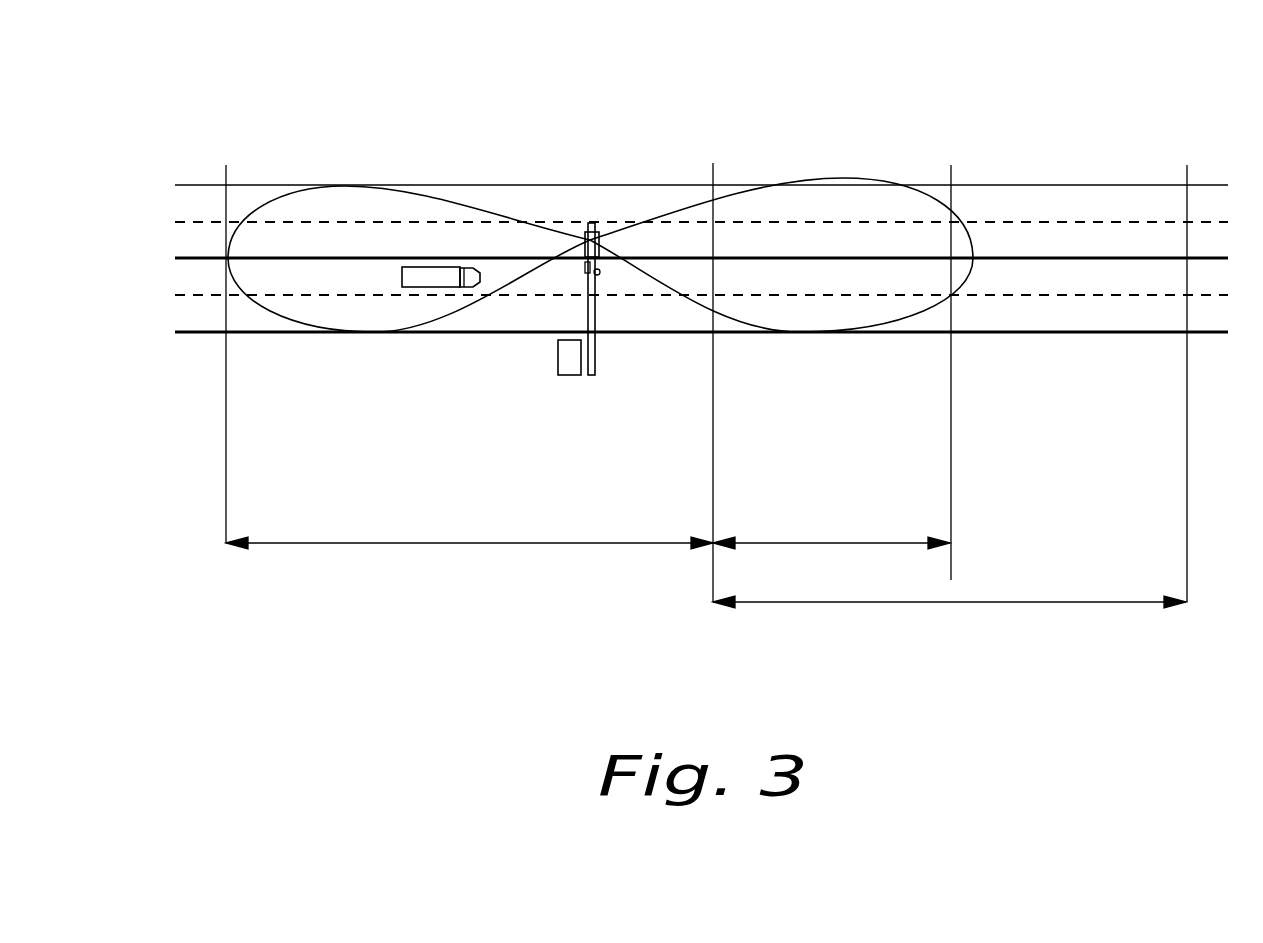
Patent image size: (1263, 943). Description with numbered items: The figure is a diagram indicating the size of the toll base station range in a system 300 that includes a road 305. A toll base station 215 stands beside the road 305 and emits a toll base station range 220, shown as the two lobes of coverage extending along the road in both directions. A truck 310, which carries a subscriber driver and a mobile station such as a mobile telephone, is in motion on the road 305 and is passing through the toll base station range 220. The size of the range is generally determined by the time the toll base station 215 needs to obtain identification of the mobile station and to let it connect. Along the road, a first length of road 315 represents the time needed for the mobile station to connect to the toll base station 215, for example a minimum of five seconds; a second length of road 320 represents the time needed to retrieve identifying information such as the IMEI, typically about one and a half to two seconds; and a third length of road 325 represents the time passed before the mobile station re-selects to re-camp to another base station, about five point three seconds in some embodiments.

The system 300 is at (188, 113).
The road 305 is at (1068, 208).
The toll base station range 220 is at (365, 200).
The truck 310 is at (423, 282).
The toll base station 215 is at (595, 362).
The length of road 315 is at (433, 543).
The length of road 320 is at (813, 543).
The length of road 325 is at (922, 602).